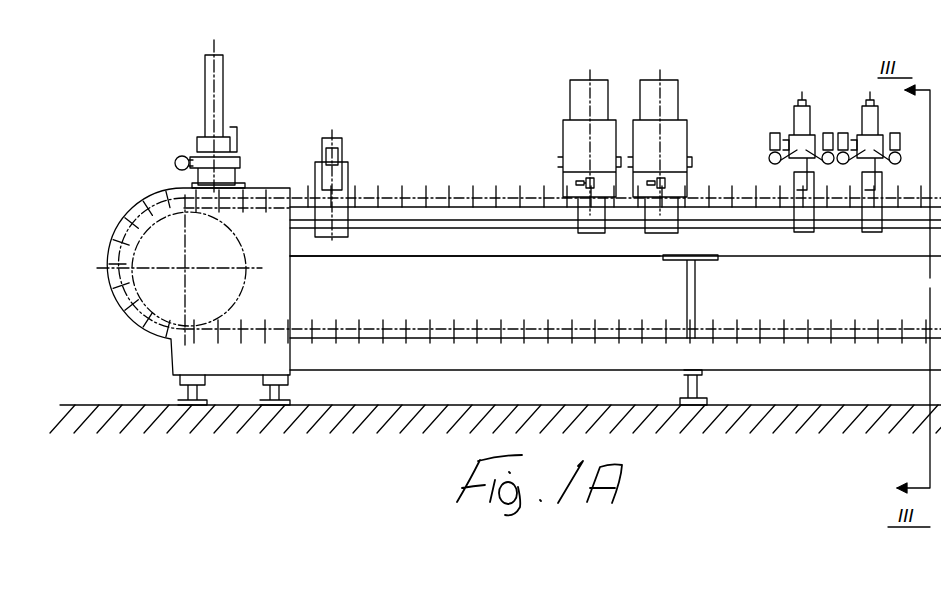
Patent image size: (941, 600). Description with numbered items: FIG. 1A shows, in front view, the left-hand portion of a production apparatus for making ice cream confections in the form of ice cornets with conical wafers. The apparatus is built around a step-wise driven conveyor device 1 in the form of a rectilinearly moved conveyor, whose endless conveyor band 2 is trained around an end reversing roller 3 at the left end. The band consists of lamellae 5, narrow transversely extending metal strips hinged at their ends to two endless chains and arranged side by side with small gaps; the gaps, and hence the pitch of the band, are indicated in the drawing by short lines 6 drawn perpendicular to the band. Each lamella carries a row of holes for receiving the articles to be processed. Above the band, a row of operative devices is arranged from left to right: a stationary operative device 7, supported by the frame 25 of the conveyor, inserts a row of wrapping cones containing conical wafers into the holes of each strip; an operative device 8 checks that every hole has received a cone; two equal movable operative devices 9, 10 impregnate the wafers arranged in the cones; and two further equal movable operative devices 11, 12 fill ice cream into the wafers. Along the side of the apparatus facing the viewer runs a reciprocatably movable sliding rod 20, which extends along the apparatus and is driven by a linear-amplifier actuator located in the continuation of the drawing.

The conveyor device 1 is at (457, 187).
The endless conveyor band 2 is at (388, 192).
The end reversing roller 3 is at (229, 232).
The lamellae 5 is at (394, 322).
The short lines 6 is at (499, 323).
The stationary operative device 7 is at (220, 112).
The operative device 8 is at (336, 152).
The operative device 9 is at (604, 86).
The operative device 10 is at (672, 86).
The operative device 11 is at (787, 117).
The operative device 12 is at (856, 110).
The sliding rod 20 is at (524, 226).
The frame 25 is at (240, 364).